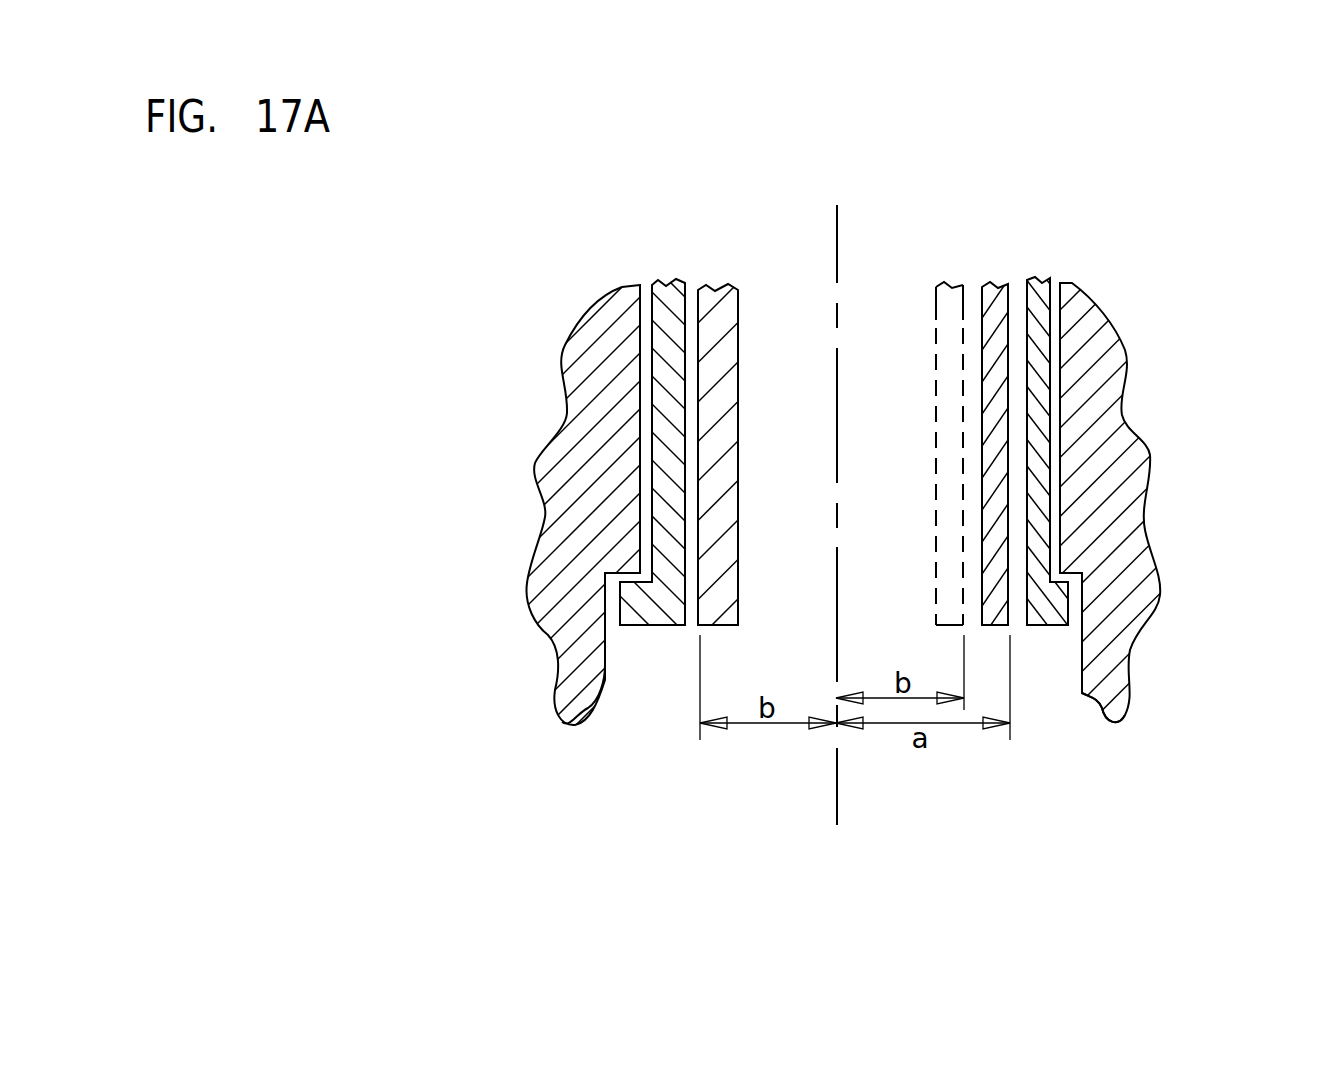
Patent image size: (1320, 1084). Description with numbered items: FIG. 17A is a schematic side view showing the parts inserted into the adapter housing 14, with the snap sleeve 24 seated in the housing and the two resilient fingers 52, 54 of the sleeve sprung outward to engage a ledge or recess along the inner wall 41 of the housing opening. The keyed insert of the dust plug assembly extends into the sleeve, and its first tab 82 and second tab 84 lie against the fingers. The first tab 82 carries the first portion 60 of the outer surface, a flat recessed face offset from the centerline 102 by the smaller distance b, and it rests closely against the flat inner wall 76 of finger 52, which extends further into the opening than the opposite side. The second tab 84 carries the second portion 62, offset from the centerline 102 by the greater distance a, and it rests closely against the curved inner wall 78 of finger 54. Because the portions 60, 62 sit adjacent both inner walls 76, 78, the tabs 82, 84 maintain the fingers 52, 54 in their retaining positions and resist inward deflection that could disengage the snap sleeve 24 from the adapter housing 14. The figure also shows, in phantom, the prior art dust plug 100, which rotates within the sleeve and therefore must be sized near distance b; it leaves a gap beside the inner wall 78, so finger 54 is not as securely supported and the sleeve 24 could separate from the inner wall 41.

The adapter housing 14 is at (565, 348).
The snap sleeve 24 is at (667, 283).
The finger 52 is at (660, 627).
The first tab 82 is at (738, 320).
The inner wall 76 is at (687, 453).
The first portion 60 is at (697, 512).
The inner wall 41 is at (605, 665).
The centerline 102 is at (837, 795).
The prior art dust plug 100 is at (952, 283).
The inner wall 78 is at (1027, 460).
The second tab 84 is at (997, 283).
The finger 54 is at (1047, 628).
The second portion 62 is at (1010, 438).